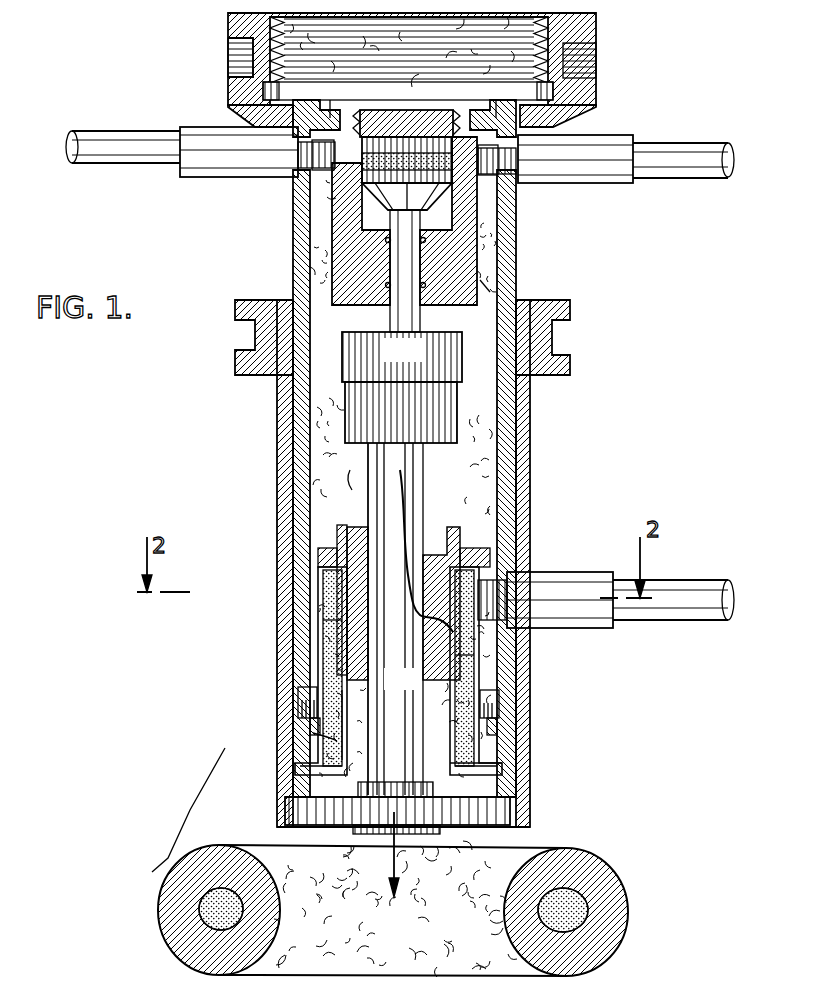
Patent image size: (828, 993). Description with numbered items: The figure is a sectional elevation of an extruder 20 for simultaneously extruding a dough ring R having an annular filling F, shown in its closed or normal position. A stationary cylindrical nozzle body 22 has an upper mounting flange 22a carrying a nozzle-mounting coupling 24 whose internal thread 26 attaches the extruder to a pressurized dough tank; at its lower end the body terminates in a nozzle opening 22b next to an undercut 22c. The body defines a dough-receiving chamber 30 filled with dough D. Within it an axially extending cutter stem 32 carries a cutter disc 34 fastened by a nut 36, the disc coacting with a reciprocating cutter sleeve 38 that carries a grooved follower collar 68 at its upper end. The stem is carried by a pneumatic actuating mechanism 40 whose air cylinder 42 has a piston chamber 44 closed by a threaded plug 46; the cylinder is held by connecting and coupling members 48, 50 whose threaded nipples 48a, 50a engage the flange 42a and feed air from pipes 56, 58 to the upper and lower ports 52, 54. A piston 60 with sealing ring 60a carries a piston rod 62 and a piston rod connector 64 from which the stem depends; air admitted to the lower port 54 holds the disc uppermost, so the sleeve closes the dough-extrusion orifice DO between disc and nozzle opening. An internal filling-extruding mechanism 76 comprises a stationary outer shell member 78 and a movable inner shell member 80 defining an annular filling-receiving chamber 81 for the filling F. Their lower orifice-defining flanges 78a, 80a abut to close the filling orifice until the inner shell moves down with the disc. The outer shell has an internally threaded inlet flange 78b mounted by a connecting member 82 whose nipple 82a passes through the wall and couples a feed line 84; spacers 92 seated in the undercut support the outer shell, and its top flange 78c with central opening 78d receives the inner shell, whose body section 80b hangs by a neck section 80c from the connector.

The extruder 20 is at (604, 409).
The nozzle body 22 is at (516, 266).
The mounting flange 22a is at (566, 112).
The nozzle opening 22b is at (503, 735).
The undercut 22c is at (310, 742).
The nozzle-mounting coupling 24 is at (588, 48).
The internal thread 26 is at (583, 72).
The dough-receiving chamber 30 is at (530, 472).
The cutter stem 32 is at (410, 688).
The cutter disc 34 is at (300, 805).
The fastening nut 36 is at (412, 838).
The cutter sleeve 38 is at (277, 403).
The pneumatic actuating mechanism 40 is at (492, 290).
The air cylinder 42 is at (340, 248).
The mounting flange 42a is at (345, 117).
The piston chamber 44 is at (362, 208).
The air cylinder seal or plug 46 is at (446, 105).
The connecting and coupling member 48 is at (196, 172).
The threaded nipple 48a is at (297, 150).
The connecting and coupling member 50 is at (620, 175).
The threaded nipple 50a is at (516, 156).
The upper port 52 is at (316, 186).
The lower port 54 is at (500, 189).
The air line or pipe 56 is at (101, 141).
The air line or pipe 58 is at (700, 152).
The piston 60 is at (406, 123).
The sealing ring 60a is at (452, 153).
The piston rod 62 is at (400, 272).
The piston rod connector 64 is at (418, 361).
The follower collar 68 is at (240, 305).
The internal filling-extruding mechanism 76 is at (332, 541).
The outer shell member 78 is at (335, 660).
The orifice-defining flange 78a is at (485, 768).
The internal threaded flange 78b is at (515, 568).
The top flange 78c is at (318, 556).
The central opening 78d is at (362, 560).
The inner shell member 80 is at (347, 649).
The orifice-defining flange 80a is at (497, 792).
The body section 80b is at (343, 724).
The neck section 80c is at (368, 476).
The filling-receiving chamber 81 is at (330, 620).
The connecting and coupling member 82 is at (605, 628).
The threaded nipple 82a is at (505, 600).
The feed line 84 is at (700, 618).
The spacers 92 is at (299, 697).
The dough D is at (308, 446).
The dough-extrusion orifice DO is at (302, 757).
The filling F is at (474, 663).
The dough ring R is at (608, 907).